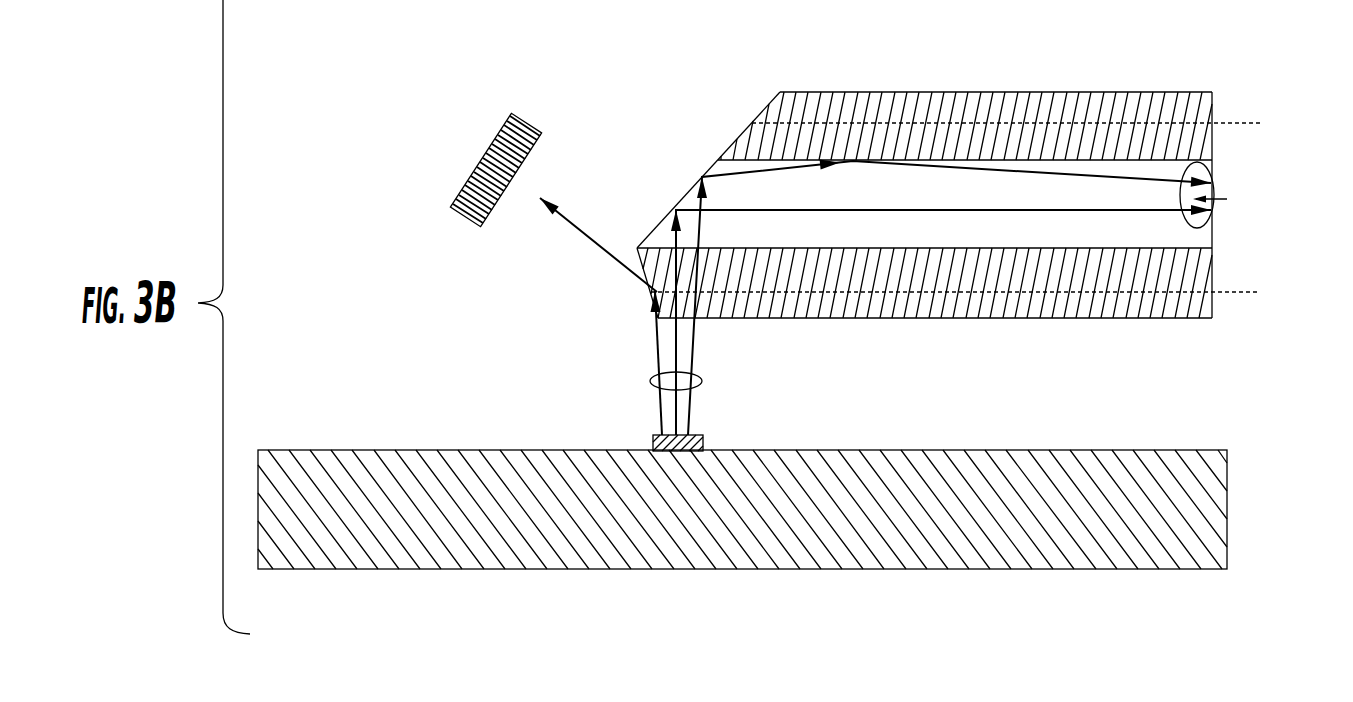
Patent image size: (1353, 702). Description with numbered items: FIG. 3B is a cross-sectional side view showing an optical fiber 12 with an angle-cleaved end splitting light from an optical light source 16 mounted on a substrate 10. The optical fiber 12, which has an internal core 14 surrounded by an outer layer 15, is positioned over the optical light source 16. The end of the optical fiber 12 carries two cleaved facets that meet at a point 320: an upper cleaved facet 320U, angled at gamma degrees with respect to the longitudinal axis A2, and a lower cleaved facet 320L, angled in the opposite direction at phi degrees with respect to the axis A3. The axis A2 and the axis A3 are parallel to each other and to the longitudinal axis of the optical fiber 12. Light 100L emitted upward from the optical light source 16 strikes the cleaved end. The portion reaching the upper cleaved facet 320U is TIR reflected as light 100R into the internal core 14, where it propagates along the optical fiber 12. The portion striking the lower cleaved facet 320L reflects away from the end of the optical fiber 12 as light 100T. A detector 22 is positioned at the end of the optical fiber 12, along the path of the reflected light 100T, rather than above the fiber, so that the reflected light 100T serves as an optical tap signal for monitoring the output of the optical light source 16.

The substrate 10 is at (1050, 452).
The optical fiber 12 is at (1200, 320).
The internal core 14 is at (1132, 168).
The upper cladding layer 15 is at (1157, 105).
The optical light source 16 is at (700, 435).
The detector 22 is at (474, 170).
The point 320 is at (637, 247).
The upper cleaved facet 320U is at (741, 134).
The lower cleaved facet 320L is at (633, 272).
The reflected light 100T is at (572, 233).
The light from the optical light source 100L is at (650, 380).
The TIR reflected light 100R is at (1213, 210).
The longitudinal axis A2 is at (1021, 121).
The axis A3 is at (970, 290).